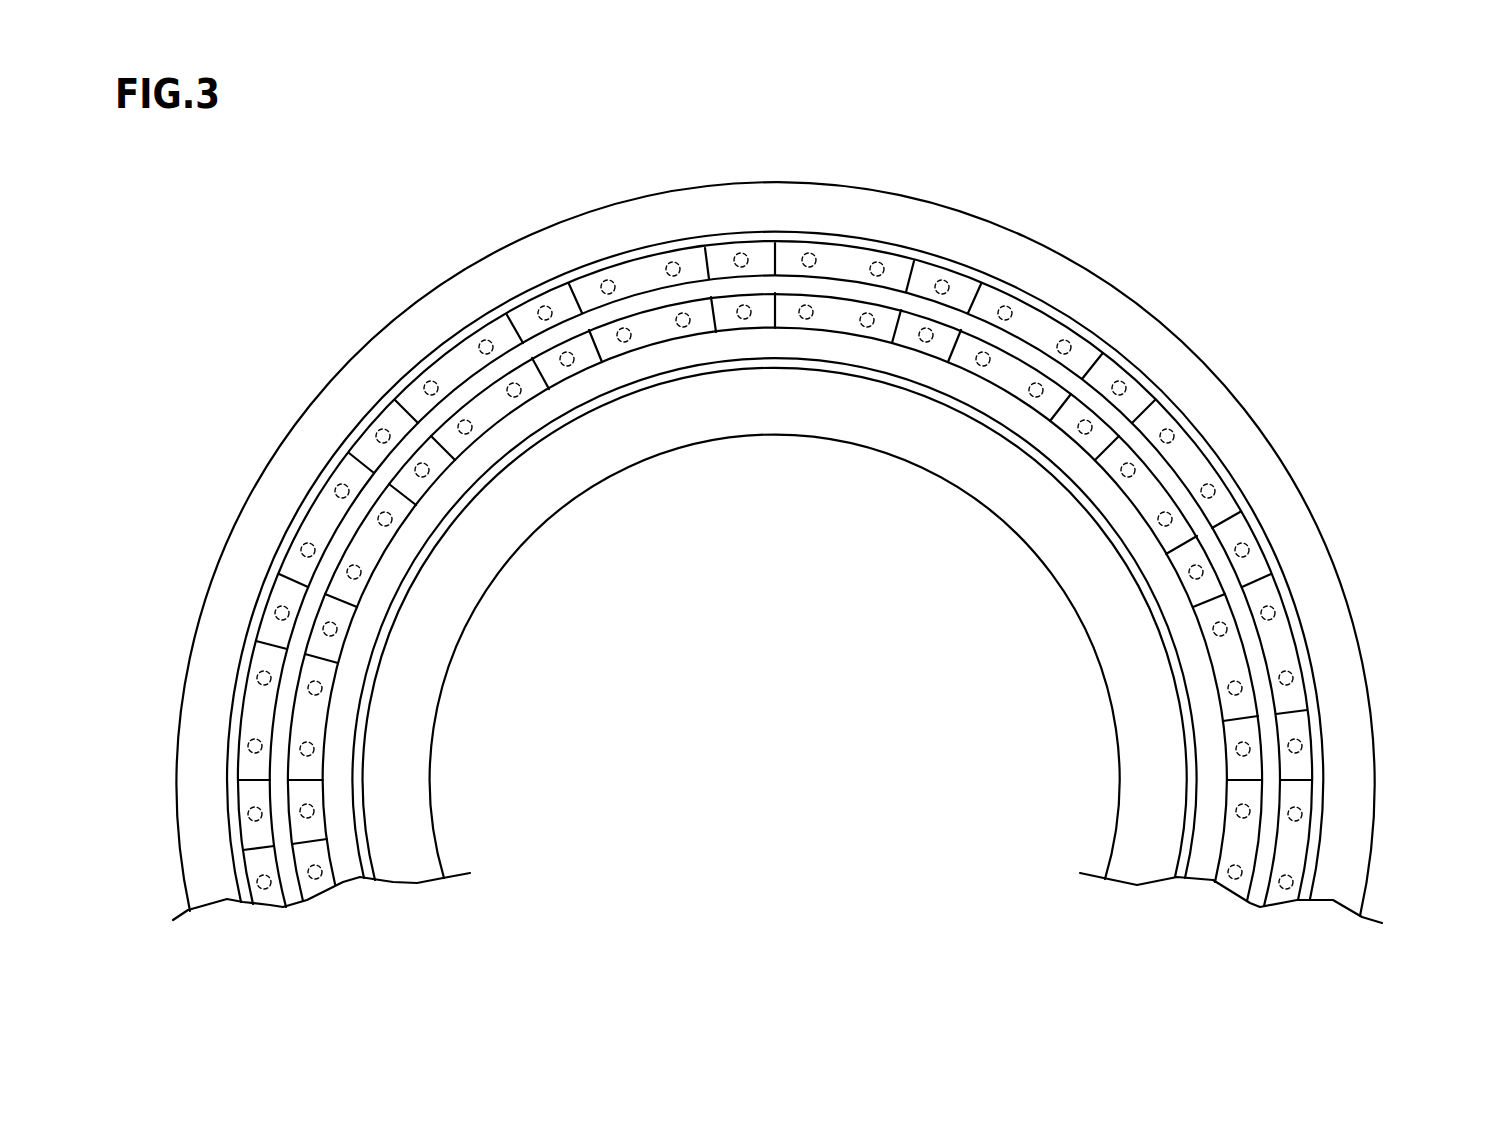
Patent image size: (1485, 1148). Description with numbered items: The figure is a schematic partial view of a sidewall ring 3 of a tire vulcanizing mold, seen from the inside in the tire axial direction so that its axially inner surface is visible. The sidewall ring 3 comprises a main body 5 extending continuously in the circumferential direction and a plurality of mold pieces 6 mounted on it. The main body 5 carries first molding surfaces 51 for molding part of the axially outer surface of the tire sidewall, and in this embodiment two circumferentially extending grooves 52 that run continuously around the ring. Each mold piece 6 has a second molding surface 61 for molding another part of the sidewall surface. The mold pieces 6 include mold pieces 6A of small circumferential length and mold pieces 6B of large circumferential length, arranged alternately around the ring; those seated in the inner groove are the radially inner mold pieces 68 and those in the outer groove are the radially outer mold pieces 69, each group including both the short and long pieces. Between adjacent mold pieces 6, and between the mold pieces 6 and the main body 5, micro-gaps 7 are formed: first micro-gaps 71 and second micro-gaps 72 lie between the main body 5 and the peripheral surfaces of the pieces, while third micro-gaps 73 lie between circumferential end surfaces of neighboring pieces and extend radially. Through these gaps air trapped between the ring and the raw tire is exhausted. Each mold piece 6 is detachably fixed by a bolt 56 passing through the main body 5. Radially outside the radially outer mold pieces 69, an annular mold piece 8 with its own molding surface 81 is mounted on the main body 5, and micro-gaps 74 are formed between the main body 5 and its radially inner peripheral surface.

The sidewall ring 3 is at (1187, 233).
The main body 5 is at (990, 278).
The first molding surfaces 51 is at (847, 243).
The circumferentially extending grooves 52 is at (1173, 417).
The bolt 56 is at (308, 550).
The mold pieces 6 is at (1107, 373).
The mold pieces having a small circumferential length 6A is at (1135, 393).
The mold pieces having a large circumferential length 6B is at (1052, 327).
The second molding surface 61 is at (792, 250).
The radially inner mold pieces 68 is at (418, 488).
The radially outer mold pieces 69 is at (363, 450).
The micro-gaps 7 is at (1232, 496).
The first micro-gaps 71 is at (1270, 655).
The second micro-gaps 72 is at (1251, 523).
The third micro-gaps 73 is at (1302, 782).
The micro-gaps 74 is at (508, 293).
The annular mold piece 8 is at (727, 212).
The molding surface 81 is at (395, 332).